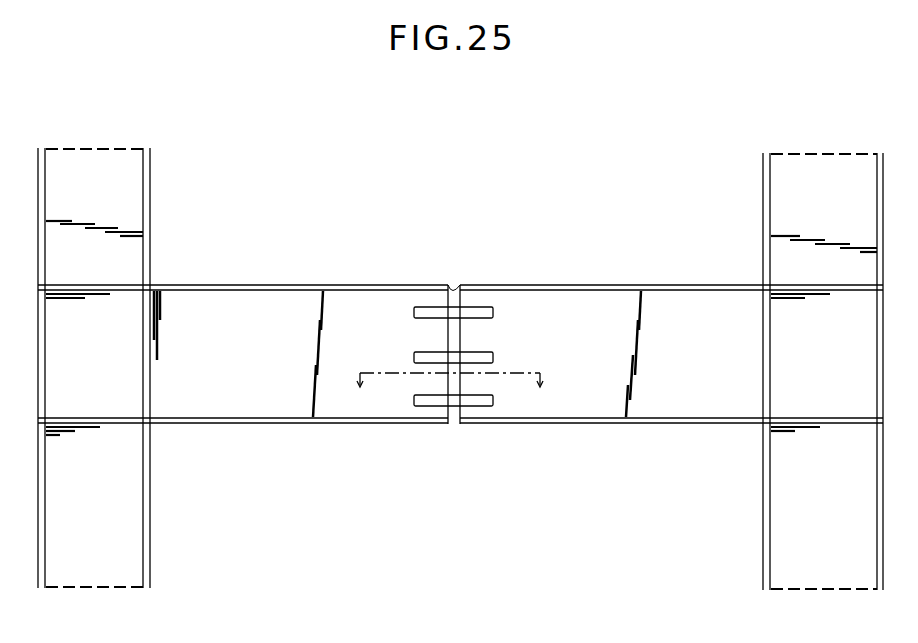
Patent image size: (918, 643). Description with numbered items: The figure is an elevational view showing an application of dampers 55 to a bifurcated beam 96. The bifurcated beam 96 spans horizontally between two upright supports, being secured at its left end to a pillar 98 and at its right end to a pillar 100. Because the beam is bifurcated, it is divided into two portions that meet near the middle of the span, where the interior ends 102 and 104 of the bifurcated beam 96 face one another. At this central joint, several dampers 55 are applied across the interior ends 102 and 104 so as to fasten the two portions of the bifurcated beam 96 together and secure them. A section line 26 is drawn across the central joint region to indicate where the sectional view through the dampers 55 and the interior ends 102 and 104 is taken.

The section line 26 is at (453, 397).
The dampers 55 is at (494, 290).
The bifurcated beam 96 is at (212, 407).
The pillar 98 is at (130, 572).
The pillar 100 is at (780, 557).
The interior end of bifurcated beam 102 is at (453, 424).
The interior end of bifurcated beam 104 is at (455, 296).